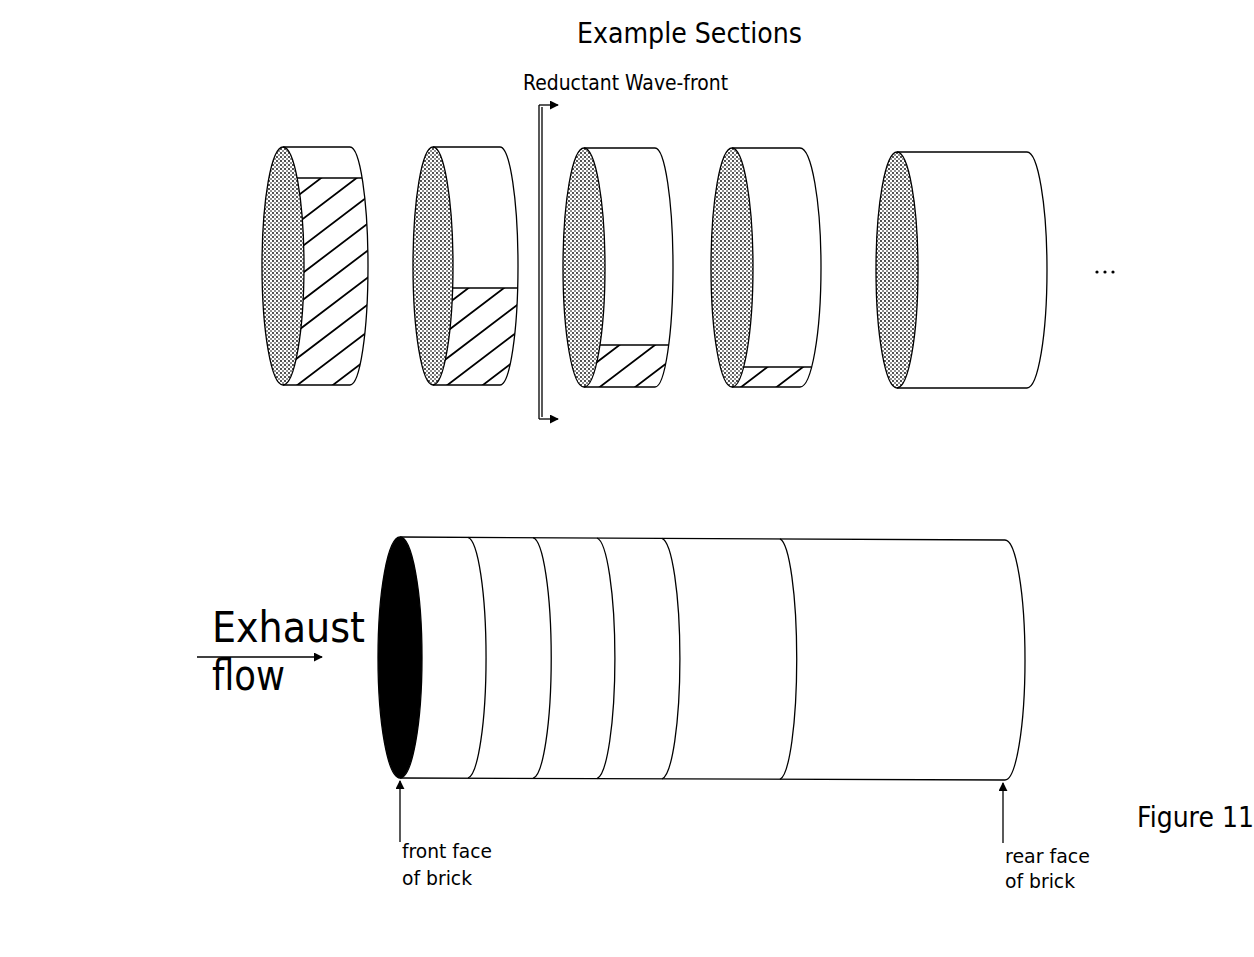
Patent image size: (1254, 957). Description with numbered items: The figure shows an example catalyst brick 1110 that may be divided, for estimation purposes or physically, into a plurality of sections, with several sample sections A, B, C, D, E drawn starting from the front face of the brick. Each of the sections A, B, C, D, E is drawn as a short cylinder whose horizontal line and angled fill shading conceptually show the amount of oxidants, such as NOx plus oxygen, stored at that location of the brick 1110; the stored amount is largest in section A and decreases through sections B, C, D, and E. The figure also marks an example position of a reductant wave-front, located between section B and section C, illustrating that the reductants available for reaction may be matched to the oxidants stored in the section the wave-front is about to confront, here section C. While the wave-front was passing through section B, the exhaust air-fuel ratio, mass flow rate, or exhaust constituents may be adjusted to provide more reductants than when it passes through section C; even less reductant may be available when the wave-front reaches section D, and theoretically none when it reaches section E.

The catalyst brick 1110 is at (701, 684).
The section A is at (423, 528).
The section B is at (508, 530).
The section C is at (562, 530).
The section D is at (648, 528).
The section E is at (708, 527).